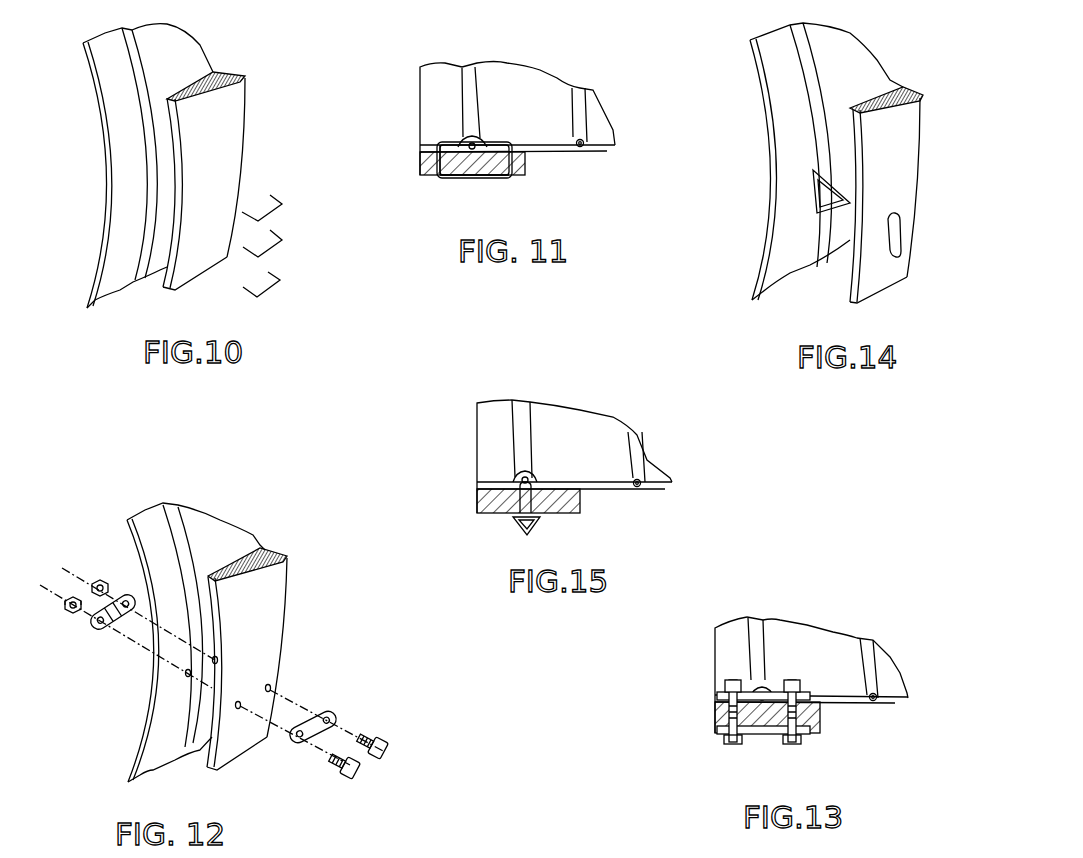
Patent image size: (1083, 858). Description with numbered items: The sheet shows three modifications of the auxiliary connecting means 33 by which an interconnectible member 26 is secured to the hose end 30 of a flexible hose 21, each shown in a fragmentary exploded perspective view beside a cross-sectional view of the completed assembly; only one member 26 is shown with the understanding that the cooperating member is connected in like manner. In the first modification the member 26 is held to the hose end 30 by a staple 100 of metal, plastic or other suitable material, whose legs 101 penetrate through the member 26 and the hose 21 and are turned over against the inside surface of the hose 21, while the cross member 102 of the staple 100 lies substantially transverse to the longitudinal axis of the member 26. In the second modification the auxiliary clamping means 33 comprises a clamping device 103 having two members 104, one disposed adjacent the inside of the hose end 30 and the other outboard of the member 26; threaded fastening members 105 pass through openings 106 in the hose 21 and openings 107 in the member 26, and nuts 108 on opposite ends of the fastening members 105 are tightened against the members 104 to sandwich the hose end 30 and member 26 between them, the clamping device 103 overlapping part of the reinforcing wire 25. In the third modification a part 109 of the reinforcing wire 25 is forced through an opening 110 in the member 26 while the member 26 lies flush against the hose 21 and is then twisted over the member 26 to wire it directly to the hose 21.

In FIG. 10, the hose 21 is at (180, 43).
In FIG. 11, the hose 21 is at (603, 147).
In FIG. 14, the hose 21 is at (847, 53).
In FIG. 12, the hose 21 is at (230, 528).
In FIG. 15, the hose 21 is at (660, 467).
In FIG. 13, the hose 21 is at (890, 660).
In FIG. 11, the reinforcing wire 25 is at (473, 145).
In FIG. 15, the reinforcing wire 25 is at (525, 478).
In FIG. 13, the reinforcing wire 25 is at (763, 695).
In FIG. 10, the member 26 is at (227, 170).
In FIG. 11, the member 26 is at (420, 163).
In FIG. 14, the member 26 is at (905, 187).
In FIG. 12, the member 26 is at (263, 610).
In FIG. 15, the member 26 is at (477, 497).
In FIG. 13, the member 26 is at (715, 720).
In FIG. 10, the hose end 30 is at (100, 257).
In FIG. 11, the hose end 30 is at (420, 82).
In FIG. 14, the hose end 30 is at (767, 237).
In FIG. 12, the hose end 30 is at (140, 718).
In FIG. 15, the hose end 30 is at (477, 438).
In FIG. 13, the hose end 30 is at (717, 638).
In FIG. 10, the auxiliary connecting means 33 is at (245, 148).
In FIG. 11, the auxiliary connecting means 33 is at (433, 183).
In FIG. 14, the auxiliary connecting means 33 is at (830, 277).
In FIG. 12, the auxiliary connecting means 33 is at (320, 692).
In FIG. 15, the auxiliary connecting means 33 is at (503, 523).
In FIG. 13, the auxiliary connecting means 33 is at (713, 737).
In FIG. 10, the staple 100 is at (277, 245).
In FIG. 11, the staple 100 is at (492, 182).
In FIG. 10, the legs 101 is at (270, 233).
In FIG. 11, the legs 101 is at (483, 147).
In FIG. 10, the cross member 102 is at (277, 270).
In FIG. 11, the cross member 102 is at (463, 177).
In FIG. 12, the clamping device 103 is at (315, 765).
In FIG. 13, the clamping device 103 is at (810, 745).
In FIG. 12, the members 104 is at (95, 633).
In FIG. 13, the members 104 is at (718, 696).
In FIG. 12, the fastening members 105 is at (367, 737).
In FIG. 13, the fastening members 105 is at (717, 715).
In FIG. 12, the openings 106 is at (213, 662).
In FIG. 12, the openings 107 is at (240, 703).
In FIG. 12, the nuts 108 is at (75, 597).
In FIG. 13, the nuts 108 is at (793, 680).
In FIG. 14, the wire part 109 is at (833, 188).
In FIG. 15, the wire part 109 is at (540, 522).
In FIG. 14, the opening 110 is at (897, 277).